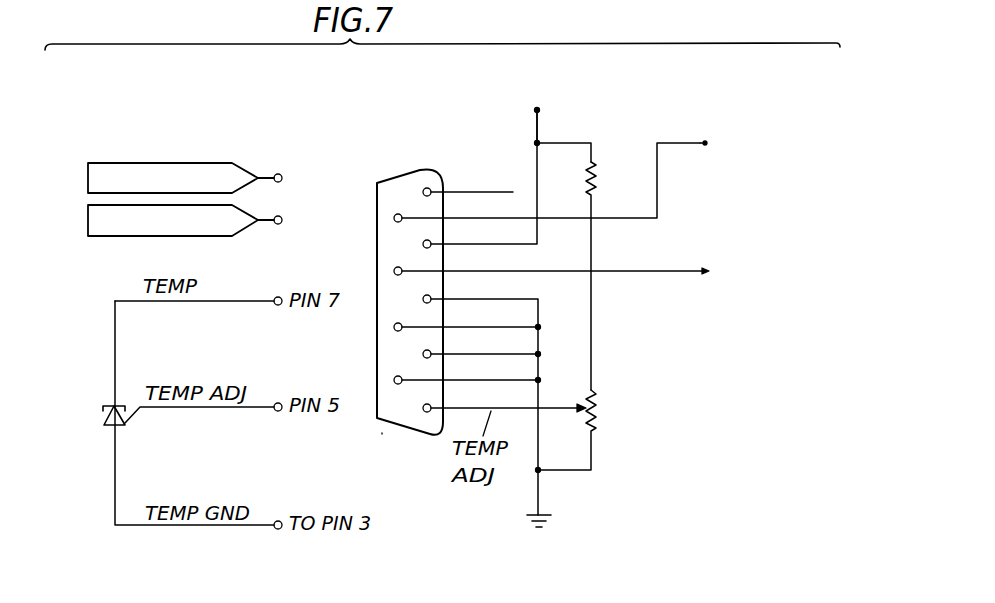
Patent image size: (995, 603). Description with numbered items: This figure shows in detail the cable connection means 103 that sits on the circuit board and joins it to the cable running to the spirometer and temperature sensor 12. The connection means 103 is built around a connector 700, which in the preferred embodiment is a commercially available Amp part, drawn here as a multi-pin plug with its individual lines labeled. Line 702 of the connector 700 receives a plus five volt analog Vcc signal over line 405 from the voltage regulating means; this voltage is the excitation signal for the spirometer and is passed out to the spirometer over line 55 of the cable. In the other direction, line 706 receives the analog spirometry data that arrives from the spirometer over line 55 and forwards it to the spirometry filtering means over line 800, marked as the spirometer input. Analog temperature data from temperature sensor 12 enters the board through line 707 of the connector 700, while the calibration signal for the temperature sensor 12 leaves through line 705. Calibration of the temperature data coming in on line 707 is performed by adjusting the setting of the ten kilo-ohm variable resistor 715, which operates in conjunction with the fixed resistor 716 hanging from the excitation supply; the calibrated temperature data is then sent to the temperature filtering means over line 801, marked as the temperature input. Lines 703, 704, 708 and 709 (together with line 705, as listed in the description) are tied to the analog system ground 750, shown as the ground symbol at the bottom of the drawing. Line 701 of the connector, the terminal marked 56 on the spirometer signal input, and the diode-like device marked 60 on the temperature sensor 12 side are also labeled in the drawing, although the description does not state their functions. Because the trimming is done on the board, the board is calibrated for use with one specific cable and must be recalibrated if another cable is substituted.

The temperature sensor 12 is at (108, 395).
The line of cable 55 is at (264, 176).
The spirometer signal input terminal 56 is at (266, 224).
The temperature sensing diode D1 LM3352 60 is at (105, 420).
The cable connection means 103 is at (407, 538).
The line from voltage regulating means 405 is at (535, 119).
The connector 700 is at (402, 183).
The connector pin 701 is at (455, 190).
The line of connector 702 is at (455, 242).
The line of connector 703 is at (455, 297).
The line of connector 704 is at (455, 352).
The line of connector 705 is at (455, 406).
The line of connector 706 is at (455, 216).
The line of connector 707 is at (455, 269).
The line of connector 708 is at (455, 325).
The line of connector 709 is at (455, 378).
The variable resistor 715 is at (600, 404).
The resistor 716 is at (595, 176).
The analog system ground 750 is at (553, 518).
The line to filtering means 800 is at (683, 141).
The line to temperature filtering means 801 is at (676, 273).